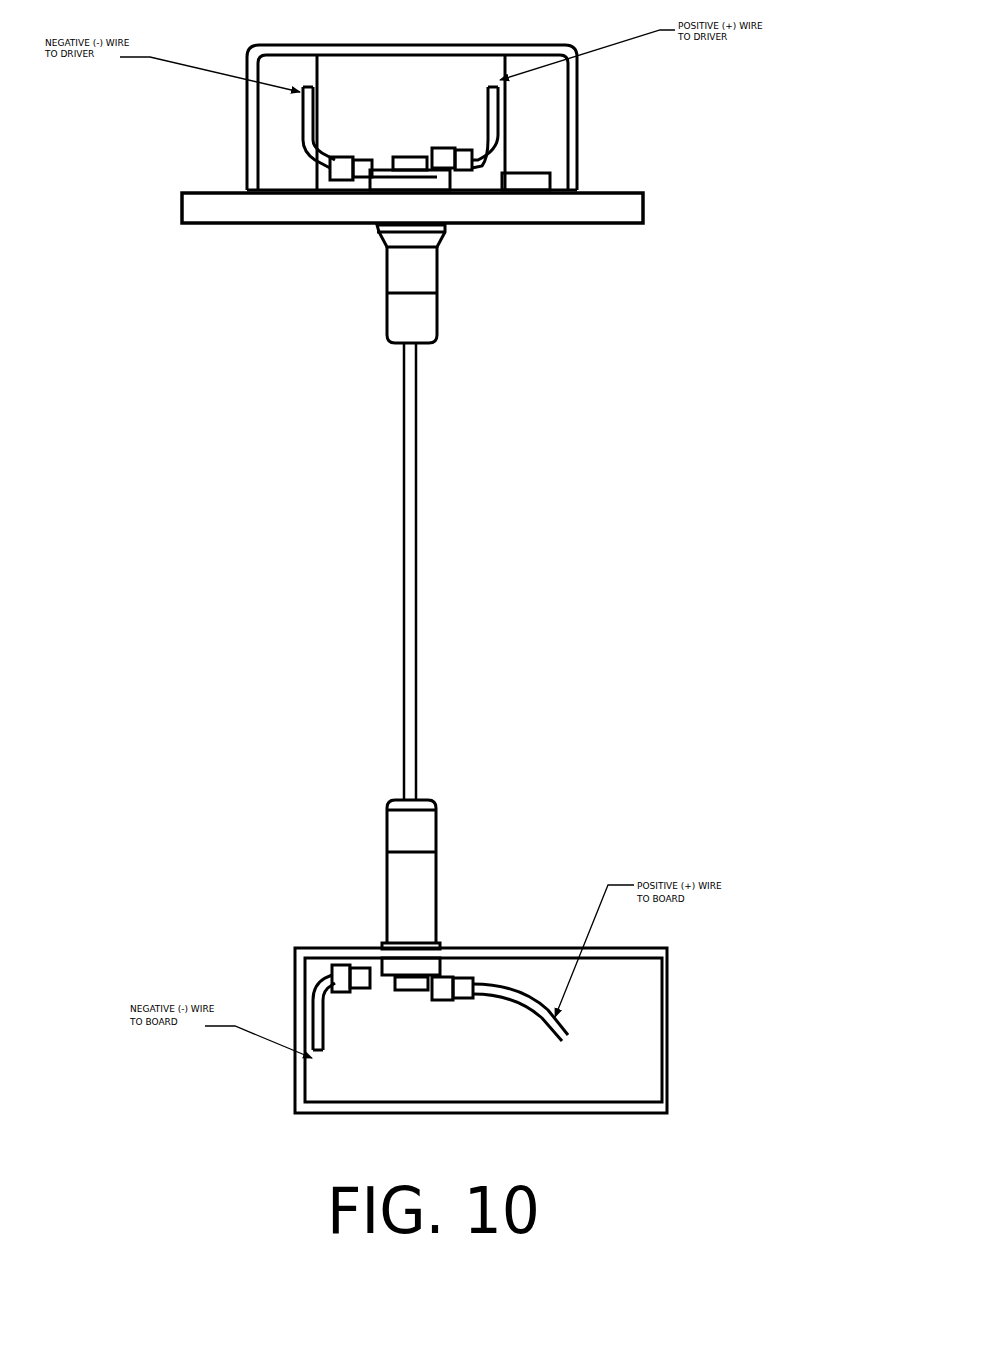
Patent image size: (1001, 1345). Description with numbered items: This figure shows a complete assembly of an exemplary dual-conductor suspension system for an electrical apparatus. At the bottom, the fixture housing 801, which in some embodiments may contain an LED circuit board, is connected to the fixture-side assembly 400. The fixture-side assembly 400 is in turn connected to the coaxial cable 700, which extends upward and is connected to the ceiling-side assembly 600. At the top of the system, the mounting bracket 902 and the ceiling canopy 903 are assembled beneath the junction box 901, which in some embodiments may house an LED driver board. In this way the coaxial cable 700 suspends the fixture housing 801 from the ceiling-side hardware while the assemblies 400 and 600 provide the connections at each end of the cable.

The fixture-side assembly 400 is at (352, 862).
The ceiling-side assembly 600 is at (357, 298).
The coaxial cable 700 is at (377, 523).
The fixture housing 801 is at (293, 975).
The junction box 901 is at (580, 148).
The mounting bracket 902 is at (232, 190).
The ceiling canopy 903 is at (180, 208).